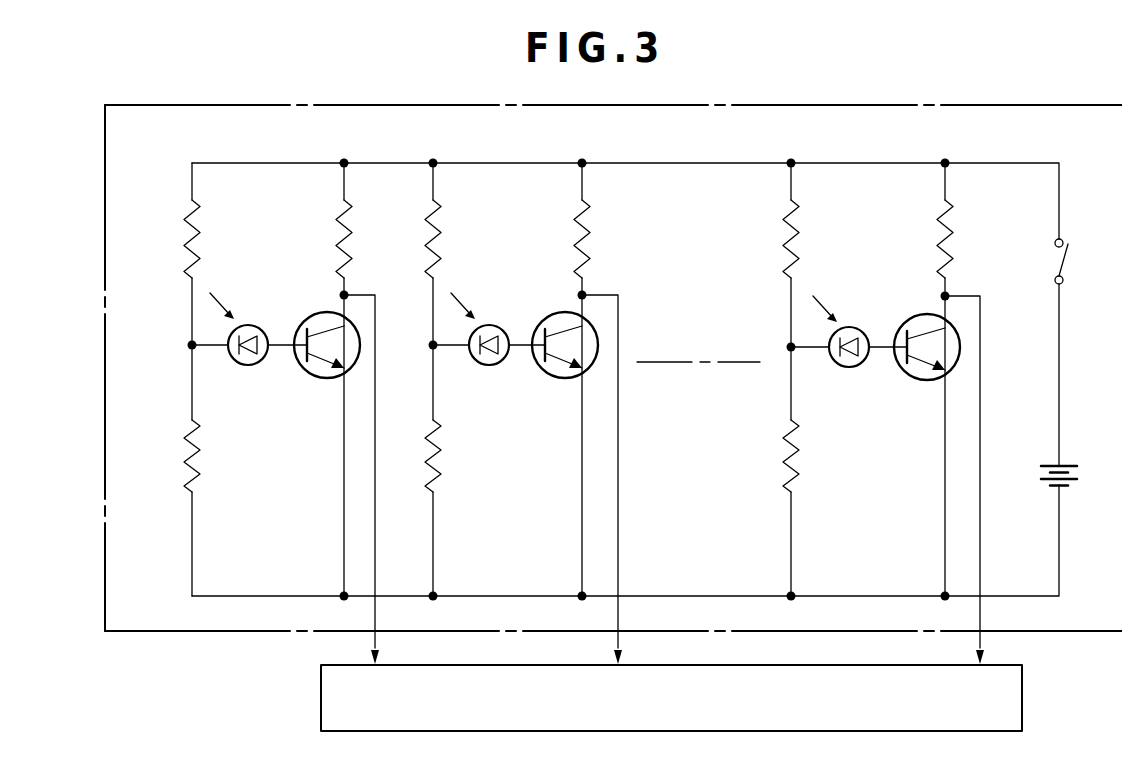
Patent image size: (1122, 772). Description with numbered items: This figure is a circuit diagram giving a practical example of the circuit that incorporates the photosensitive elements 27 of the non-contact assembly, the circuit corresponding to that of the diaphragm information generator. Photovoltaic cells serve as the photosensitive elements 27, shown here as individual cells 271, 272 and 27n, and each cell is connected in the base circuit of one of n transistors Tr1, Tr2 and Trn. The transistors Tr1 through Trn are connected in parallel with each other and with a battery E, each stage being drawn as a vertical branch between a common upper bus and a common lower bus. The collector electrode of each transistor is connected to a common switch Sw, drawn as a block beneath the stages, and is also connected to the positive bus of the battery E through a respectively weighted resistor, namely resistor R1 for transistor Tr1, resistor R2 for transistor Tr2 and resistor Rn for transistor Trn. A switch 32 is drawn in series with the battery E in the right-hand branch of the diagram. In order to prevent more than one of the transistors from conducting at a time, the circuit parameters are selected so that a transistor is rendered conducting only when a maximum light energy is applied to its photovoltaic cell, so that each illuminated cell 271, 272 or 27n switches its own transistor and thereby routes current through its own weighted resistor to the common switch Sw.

The photosensitive elements 27 is at (1040, 116).
The photosensitive element 271 is at (248, 366).
The photosensitive element 272 is at (489, 366).
The photosensitive element 27n is at (849, 368).
The transistor Tr1 is at (331, 316).
The transistor Tr2 is at (567, 316).
The transistor Trn is at (929, 318).
The weighted resistor R1 is at (358, 220).
The weighted resistor R2 is at (596, 220).
The weighted resistor Rn is at (961, 220).
The switch 32 is at (1071, 258).
The battery E is at (1075, 472).
The common switch Sw is at (671, 698).